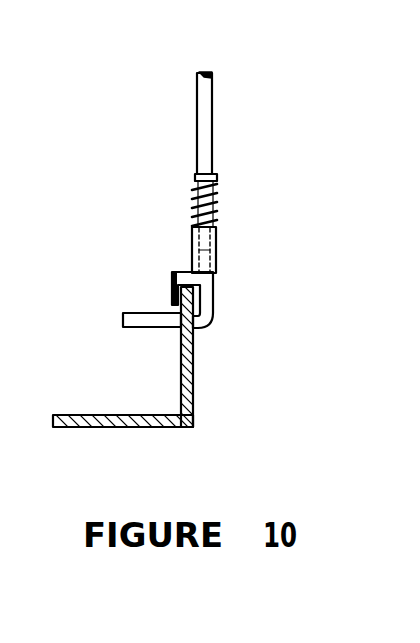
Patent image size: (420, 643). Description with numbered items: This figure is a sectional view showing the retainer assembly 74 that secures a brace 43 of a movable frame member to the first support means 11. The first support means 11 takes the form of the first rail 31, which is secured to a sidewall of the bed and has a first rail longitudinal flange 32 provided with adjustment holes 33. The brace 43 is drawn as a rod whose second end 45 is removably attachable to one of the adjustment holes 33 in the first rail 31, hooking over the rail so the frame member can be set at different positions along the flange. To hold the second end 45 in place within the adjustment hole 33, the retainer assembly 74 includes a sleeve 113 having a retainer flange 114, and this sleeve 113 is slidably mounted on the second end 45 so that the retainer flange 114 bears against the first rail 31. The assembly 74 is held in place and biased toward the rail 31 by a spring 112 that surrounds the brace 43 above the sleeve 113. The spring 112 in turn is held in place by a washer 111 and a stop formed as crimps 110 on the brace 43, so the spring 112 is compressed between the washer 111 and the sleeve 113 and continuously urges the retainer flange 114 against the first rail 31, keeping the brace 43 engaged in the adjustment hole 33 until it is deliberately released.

The first support means 11 is at (200, 372).
The first rail 31 is at (201, 395).
The first rail longitudinal flange 32 is at (181, 380).
The adjustment holes 33 is at (194, 335).
The brace 43 is at (217, 117).
The second end 45 is at (226, 257).
The retainer assembly 74 is at (224, 235).
The crimps 110 is at (213, 170).
The washer 111 is at (197, 178).
The spring 112 is at (193, 210).
The sleeve 113 is at (192, 253).
The retainer flange 114 is at (173, 293).